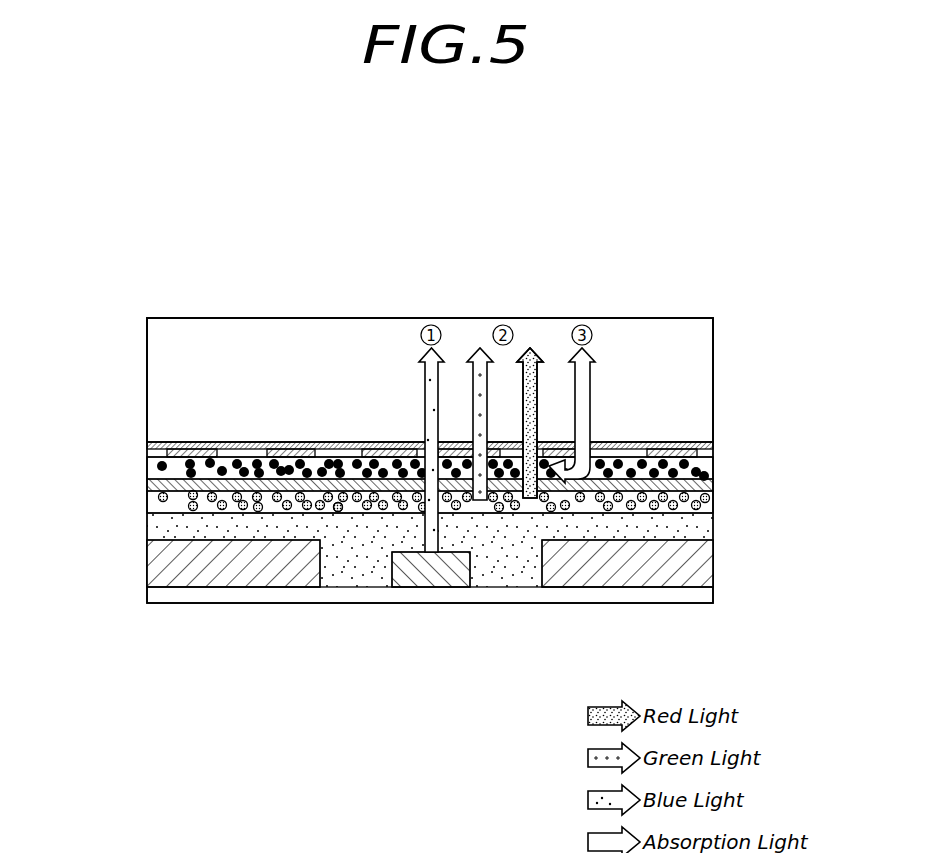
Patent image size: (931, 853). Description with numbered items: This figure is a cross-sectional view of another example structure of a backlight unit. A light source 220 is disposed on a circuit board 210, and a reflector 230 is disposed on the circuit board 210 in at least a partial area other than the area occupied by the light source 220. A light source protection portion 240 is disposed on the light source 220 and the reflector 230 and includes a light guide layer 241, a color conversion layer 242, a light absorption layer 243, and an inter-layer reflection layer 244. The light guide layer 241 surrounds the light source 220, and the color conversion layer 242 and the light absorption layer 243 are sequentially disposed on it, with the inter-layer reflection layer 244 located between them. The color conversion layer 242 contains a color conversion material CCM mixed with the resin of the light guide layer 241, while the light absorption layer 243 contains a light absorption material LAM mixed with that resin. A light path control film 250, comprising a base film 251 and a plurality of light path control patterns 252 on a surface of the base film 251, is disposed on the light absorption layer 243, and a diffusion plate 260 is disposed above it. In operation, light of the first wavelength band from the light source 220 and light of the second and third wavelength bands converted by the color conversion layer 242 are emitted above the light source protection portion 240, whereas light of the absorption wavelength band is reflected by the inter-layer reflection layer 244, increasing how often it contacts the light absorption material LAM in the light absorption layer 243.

The circuit board 210 is at (152, 594).
The light source 220 is at (428, 575).
The reflector 230 is at (152, 562).
The light source protection portion 240 is at (502, 515).
The light guide layer 241 is at (708, 530).
The color conversion layer 242 is at (708, 502).
The light absorption layer 243 is at (708, 465).
The inter-layer reflection layer 244 is at (708, 483).
The light path control film 250 is at (365, 455).
The base film 251 is at (147, 445).
The light path control pattern 252 is at (180, 457).
The diffusion plate 260 is at (147, 378).
The light absorption material LAM is at (289, 470).
The color conversion material CCM is at (340, 510).